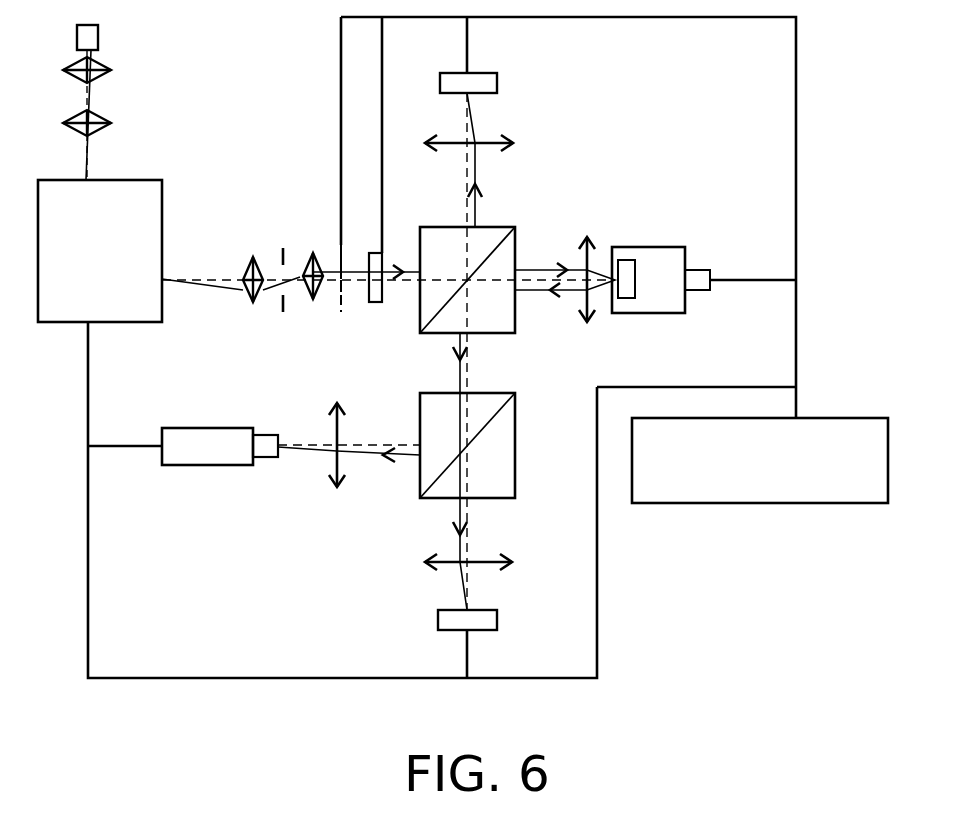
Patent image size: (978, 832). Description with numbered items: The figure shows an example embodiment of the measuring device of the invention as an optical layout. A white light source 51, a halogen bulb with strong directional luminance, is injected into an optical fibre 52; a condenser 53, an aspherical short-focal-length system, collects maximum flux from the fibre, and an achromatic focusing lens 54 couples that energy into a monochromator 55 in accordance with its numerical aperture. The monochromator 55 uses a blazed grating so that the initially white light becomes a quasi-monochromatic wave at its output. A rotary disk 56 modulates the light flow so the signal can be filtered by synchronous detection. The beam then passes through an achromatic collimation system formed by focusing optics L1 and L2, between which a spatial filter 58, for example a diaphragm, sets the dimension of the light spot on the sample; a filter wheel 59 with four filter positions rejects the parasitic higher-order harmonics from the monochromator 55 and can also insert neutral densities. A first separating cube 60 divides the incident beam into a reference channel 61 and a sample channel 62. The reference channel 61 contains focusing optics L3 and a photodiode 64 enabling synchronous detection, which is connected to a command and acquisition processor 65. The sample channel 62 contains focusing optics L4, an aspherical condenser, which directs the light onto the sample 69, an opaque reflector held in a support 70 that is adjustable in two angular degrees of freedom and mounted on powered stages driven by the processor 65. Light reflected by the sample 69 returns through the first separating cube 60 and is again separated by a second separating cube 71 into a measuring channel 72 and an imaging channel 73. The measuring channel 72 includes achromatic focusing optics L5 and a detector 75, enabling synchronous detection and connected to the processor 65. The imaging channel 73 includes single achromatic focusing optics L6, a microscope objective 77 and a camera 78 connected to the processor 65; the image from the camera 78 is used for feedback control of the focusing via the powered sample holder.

The white light source 51 is at (92, 38).
The optical fibre 52 is at (95, 56).
The condenser 53 is at (100, 75).
The achromatic focusing lens 54 is at (100, 130).
The monochromator 55 is at (127, 312).
The rotary disk 56 is at (338, 310).
The spatial filter 58 is at (280, 305).
The filter wheel 59 is at (376, 300).
The first separating cube 60 is at (488, 323).
The reference channel 61 is at (520, 140).
The sample channel 62 is at (553, 303).
The photodiode 64 is at (490, 83).
The command and acquisition processor 65 is at (727, 492).
The sample 69 is at (624, 268).
The support 70 is at (678, 248).
The second separating cube 71 is at (495, 452).
The measuring channel 72 is at (512, 548).
The imaging channel 73 is at (325, 485).
The detector 75 is at (485, 620).
The microscope objective 77 is at (265, 452).
The camera 78 is at (193, 450).
The focusing optics L1 is at (240, 271).
The focusing optics L2 is at (310, 264).
The focusing optics L3 is at (455, 133).
The focusing optics L4 is at (573, 273).
The achromatic focusing optics L5 is at (457, 550).
The achromatic focusing optics L6 is at (351, 440).